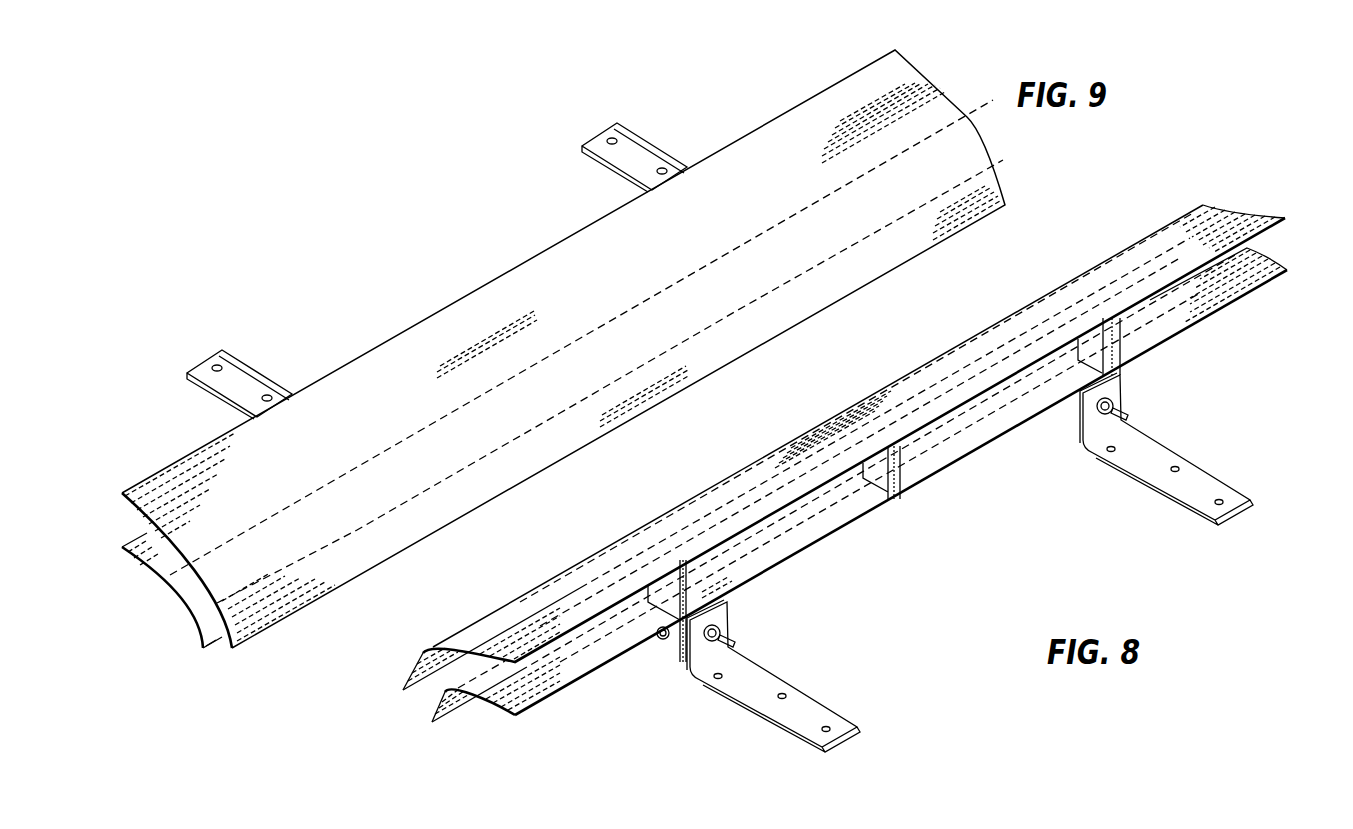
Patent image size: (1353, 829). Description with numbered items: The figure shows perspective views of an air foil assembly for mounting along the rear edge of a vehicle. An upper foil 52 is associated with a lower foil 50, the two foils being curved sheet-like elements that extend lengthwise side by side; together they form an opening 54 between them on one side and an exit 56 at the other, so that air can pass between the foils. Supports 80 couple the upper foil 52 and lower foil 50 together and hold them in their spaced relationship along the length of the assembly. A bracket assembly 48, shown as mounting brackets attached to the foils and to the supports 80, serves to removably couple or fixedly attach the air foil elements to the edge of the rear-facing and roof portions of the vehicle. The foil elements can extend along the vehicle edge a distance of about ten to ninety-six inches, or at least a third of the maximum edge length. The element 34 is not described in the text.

In FIG. 8, the support beam 34 is at (1032, 305).
In FIG. 9, the bracket assembly 48 is at (633, 133).
In FIG. 8, the bracket assembly 48 is at (672, 665).
In FIG. 9, the lower foil 50 is at (128, 556).
In FIG. 8, the lower foil 50 is at (502, 717).
In FIG. 9, the upper foil 52 is at (960, 113).
In FIG. 8, the upper foil 52 is at (417, 663).
In FIG. 8, the opening 54 is at (785, 553).
In FIG. 9, the exit 56 is at (222, 648).
In FIG. 8, the exit 56 is at (422, 703).
In FIG. 8, the supports 80 is at (660, 630).